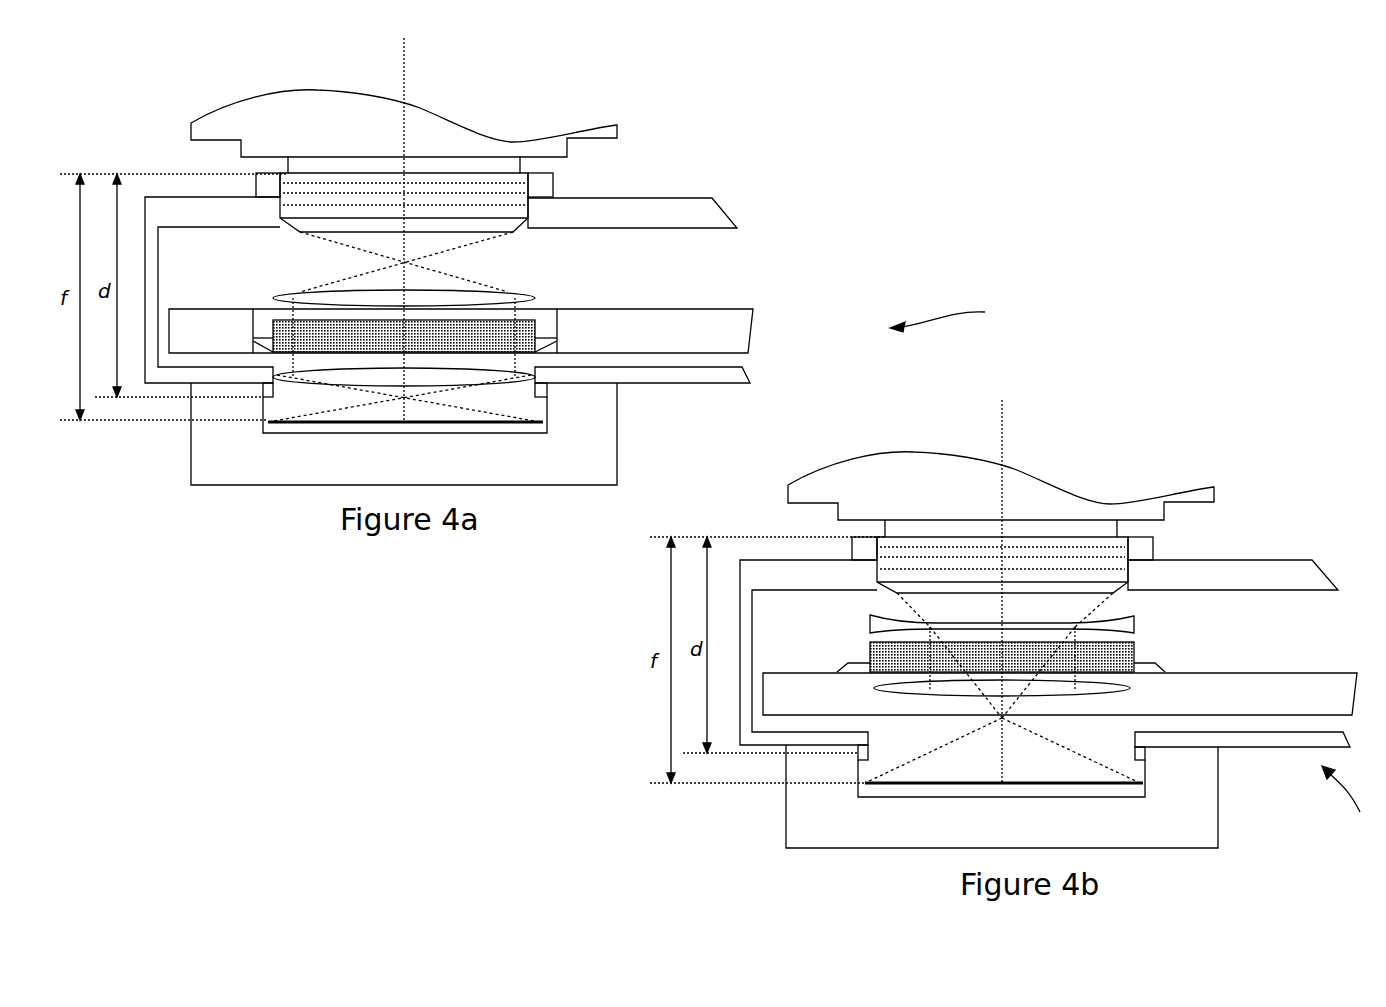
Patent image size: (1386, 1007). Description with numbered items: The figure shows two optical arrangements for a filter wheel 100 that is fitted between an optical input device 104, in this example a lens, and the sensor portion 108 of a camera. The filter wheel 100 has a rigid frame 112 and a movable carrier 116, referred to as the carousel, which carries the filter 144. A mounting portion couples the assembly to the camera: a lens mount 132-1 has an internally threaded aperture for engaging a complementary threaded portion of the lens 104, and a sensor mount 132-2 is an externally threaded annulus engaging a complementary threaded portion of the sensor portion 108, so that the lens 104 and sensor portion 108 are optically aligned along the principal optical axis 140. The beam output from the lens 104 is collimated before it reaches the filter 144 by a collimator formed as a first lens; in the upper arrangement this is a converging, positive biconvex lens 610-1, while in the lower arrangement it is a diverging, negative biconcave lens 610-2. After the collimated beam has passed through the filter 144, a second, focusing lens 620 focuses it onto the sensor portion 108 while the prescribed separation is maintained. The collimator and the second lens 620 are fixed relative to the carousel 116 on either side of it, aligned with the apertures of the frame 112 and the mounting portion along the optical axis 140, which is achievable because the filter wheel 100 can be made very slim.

In FIG. 4A, the filter wheel 100 is at (960, 317).
In FIG. 4B, the filter wheel 100 is at (1352, 801).
In FIG. 4A, the optical input device 104 is at (236, 103).
In FIG. 4B, the optical input device 104 is at (826, 466).
In FIG. 4A, the sensor portion 108 is at (448, 425).
In FIG. 4B, the sensor portion 108 is at (1055, 786).
In FIG. 4A, the frame 112 is at (716, 206).
In FIG. 4B, the frame 112 is at (1300, 560).
In FIG. 4A, the movable carrier 116 is at (730, 308).
In FIG. 4B, the movable carrier 116 is at (1300, 672).
In FIG. 4A, the lens mount 132-1 is at (554, 185).
In FIG. 4B, the lens mount 132-1 is at (1155, 553).
In FIG. 4A, the sensor mount 132-2 is at (545, 398).
In FIG. 4B, the sensor mount 132-2 is at (1145, 762).
In FIG. 4A, the principal optical axis 140 is at (405, 82).
In FIG. 4B, the principal optical axis 140 is at (1003, 406).
In FIG. 4A, the filter 144 is at (273, 332).
In FIG. 4B, the filter 144 is at (878, 656).
In FIG. 4A, the converging lens 610-1 is at (538, 296).
In FIG. 4B, the diverging lens 610-2 is at (1137, 627).
In FIG. 4A, the second lens 620 is at (527, 373).
In FIG. 4B, the second lens 620 is at (1125, 688).